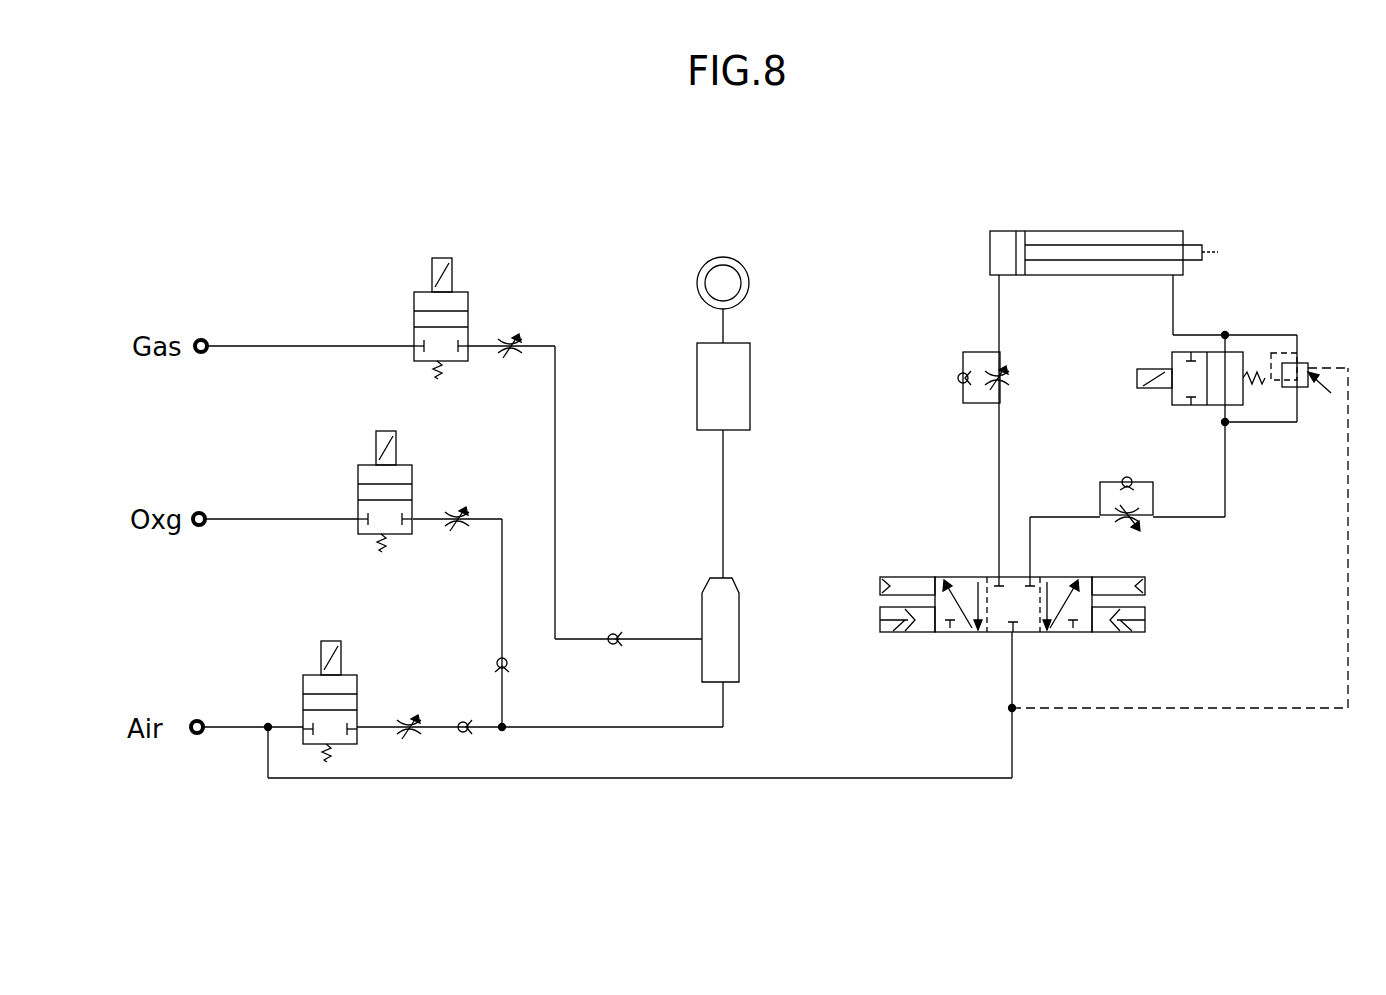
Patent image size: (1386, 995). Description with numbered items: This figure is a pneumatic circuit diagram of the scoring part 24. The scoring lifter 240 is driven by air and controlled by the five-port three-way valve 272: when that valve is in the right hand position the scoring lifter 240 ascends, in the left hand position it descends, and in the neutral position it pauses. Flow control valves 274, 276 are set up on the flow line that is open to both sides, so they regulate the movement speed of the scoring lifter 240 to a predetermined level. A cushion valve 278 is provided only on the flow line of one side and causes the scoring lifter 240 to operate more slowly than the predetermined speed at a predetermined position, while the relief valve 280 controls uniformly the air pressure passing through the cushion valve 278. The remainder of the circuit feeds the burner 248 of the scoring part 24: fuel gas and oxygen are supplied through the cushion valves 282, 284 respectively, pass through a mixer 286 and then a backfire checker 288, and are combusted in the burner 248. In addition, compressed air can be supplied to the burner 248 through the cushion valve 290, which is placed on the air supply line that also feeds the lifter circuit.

The scoring part 24 is at (862, 231).
The scoring lifter 240 is at (1095, 231).
The burner 248 is at (749, 283).
The 5-port 3-way valve 272 is at (950, 577).
The flow control valve 274 is at (973, 352).
The flow control valve 276 is at (1100, 492).
The cushion valve 278 is at (1172, 360).
The relief valve 280 is at (1305, 363).
The cushion valve 282 is at (468, 300).
The cushion valve 284 is at (413, 474).
The mixer 286 is at (739, 630).
The backfire checker 288 is at (750, 387).
The cushion valve 290 is at (357, 683).